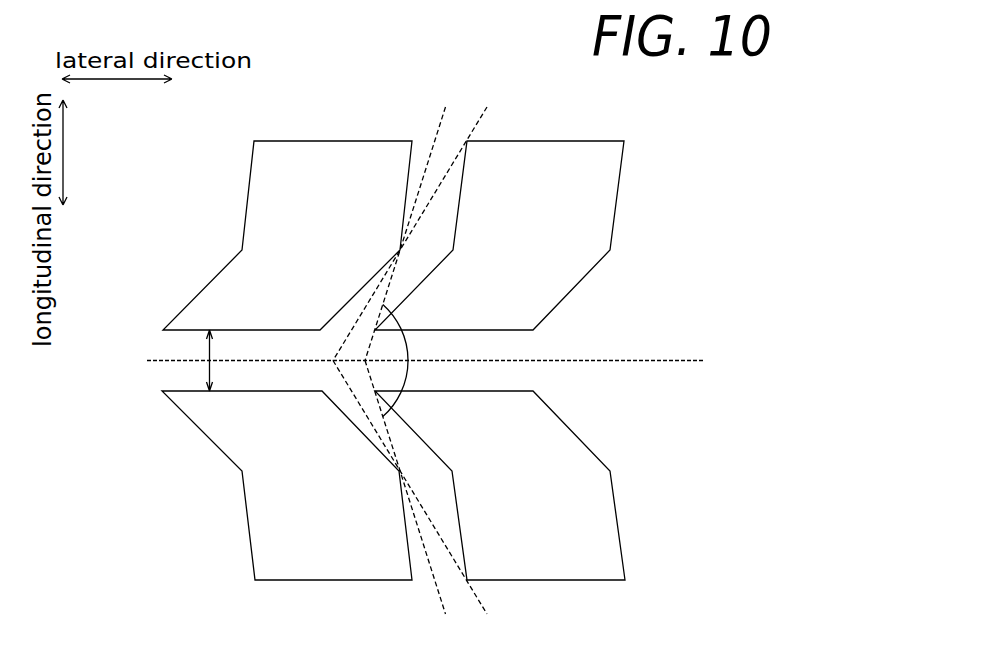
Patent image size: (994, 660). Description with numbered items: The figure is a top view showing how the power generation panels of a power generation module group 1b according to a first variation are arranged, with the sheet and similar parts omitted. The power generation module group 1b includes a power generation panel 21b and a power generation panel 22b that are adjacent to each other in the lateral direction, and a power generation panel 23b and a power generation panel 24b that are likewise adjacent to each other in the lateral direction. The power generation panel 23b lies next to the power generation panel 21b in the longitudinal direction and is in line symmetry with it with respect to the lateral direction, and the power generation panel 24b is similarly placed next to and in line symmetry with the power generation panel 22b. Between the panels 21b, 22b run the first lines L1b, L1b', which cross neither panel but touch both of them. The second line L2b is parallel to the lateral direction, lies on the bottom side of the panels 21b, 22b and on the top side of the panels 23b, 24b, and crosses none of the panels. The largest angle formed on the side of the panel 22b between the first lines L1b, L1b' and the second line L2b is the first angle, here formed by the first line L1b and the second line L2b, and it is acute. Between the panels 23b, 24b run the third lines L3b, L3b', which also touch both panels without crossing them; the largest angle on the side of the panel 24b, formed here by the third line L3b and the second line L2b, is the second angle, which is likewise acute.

The power generation module group 1b is at (838, 60).
The power generation panel 21b is at (255, 212).
The power generation panel 22b is at (603, 212).
The power generation panel 23b is at (259, 532).
The power generation panel 24b is at (607, 531).
The first line L1b is at (408, 216).
The first line L1b' is at (426, 216).
The second line L2b is at (453, 361).
The third line L3b is at (408, 507).
The third line L3b' is at (427, 507).